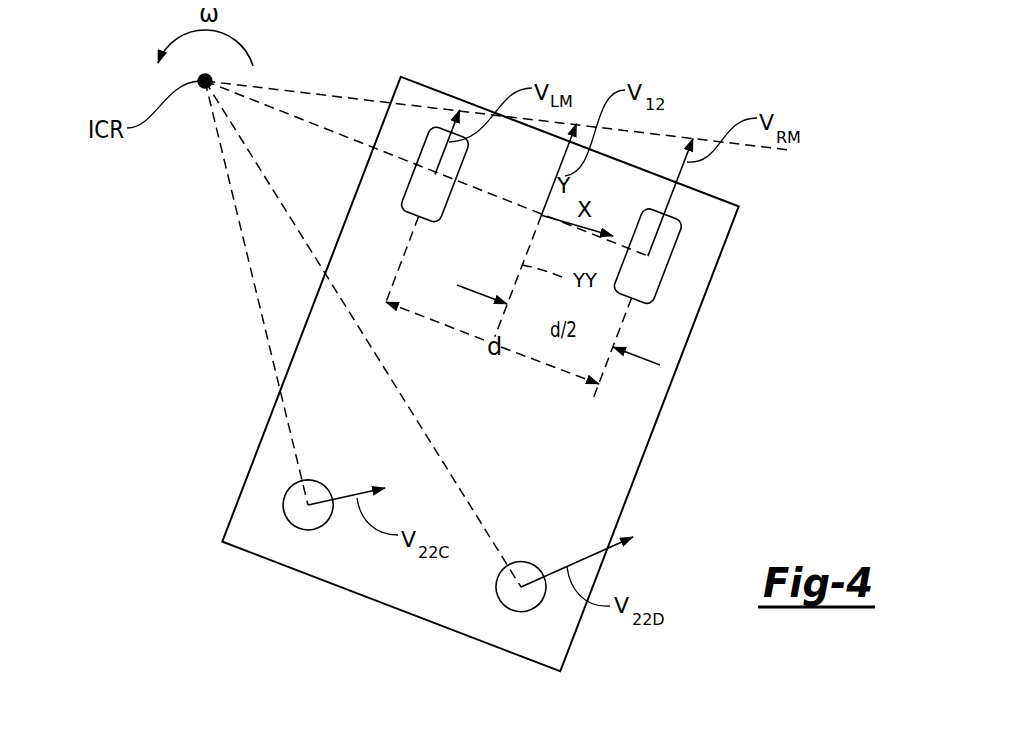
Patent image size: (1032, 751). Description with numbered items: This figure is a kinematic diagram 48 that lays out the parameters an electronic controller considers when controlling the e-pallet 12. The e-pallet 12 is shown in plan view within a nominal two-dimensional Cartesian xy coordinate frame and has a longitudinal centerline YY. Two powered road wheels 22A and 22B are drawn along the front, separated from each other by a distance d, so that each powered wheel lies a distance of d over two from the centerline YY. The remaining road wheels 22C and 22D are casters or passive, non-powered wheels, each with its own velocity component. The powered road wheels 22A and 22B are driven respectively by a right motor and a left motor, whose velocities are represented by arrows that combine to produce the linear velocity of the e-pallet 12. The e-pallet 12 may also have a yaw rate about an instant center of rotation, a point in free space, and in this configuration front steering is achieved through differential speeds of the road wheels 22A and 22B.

The e-pallet 12 is at (506, 421).
The powered road wheel 22A is at (403, 197).
The powered road wheel 22B is at (660, 287).
The non-powered road wheel 22C is at (293, 528).
The non-powered road wheel 22D is at (510, 612).
The kinematic diagram 48 is at (787, 50).